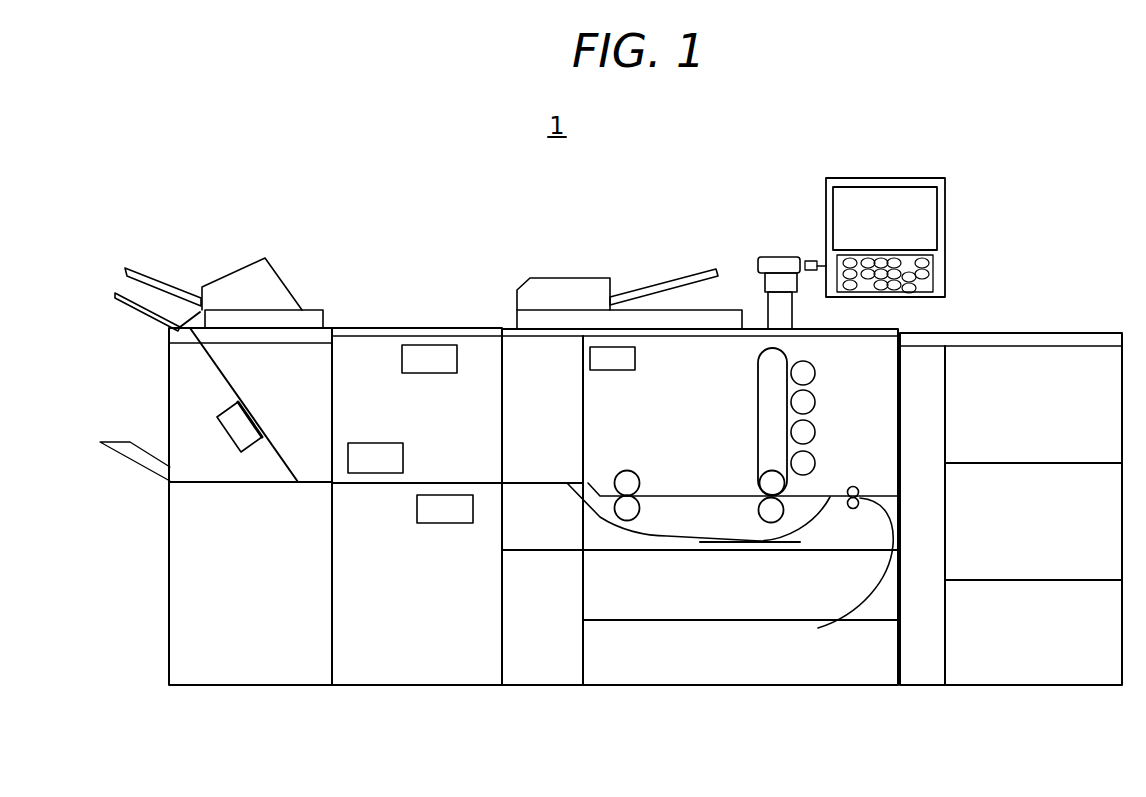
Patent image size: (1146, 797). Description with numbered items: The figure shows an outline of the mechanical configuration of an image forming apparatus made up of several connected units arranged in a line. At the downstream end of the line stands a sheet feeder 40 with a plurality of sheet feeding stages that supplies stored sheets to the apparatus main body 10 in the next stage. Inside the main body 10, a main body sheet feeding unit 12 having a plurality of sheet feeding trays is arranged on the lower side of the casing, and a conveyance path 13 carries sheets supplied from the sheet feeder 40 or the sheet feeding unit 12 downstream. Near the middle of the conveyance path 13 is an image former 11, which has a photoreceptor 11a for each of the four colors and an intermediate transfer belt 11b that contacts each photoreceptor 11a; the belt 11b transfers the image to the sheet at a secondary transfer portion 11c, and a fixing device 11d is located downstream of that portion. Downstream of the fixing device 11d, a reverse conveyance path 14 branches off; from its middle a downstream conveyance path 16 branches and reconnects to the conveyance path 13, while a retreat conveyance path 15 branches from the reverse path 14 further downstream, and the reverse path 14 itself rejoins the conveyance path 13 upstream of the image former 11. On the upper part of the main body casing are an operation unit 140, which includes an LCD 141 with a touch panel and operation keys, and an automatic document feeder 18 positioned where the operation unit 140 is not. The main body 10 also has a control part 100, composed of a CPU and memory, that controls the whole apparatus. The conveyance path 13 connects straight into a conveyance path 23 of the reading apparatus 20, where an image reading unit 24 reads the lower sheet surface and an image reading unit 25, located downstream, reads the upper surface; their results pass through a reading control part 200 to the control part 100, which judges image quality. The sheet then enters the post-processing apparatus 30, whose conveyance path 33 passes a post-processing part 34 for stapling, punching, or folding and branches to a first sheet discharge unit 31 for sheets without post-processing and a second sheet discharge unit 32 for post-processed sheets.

The apparatus main body 10 is at (760, 429).
The image former 11 is at (774, 435).
The photoreceptor 11a is at (822, 390).
The intermediate transfer belt 11b is at (757, 410).
The secondary transfer portion 11c is at (773, 510).
The fixing device 11d is at (627, 482).
The main body sheet feeding unit 12 is at (627, 655).
The conveyance path 13 is at (830, 493).
The reverse conveyance path 14 is at (663, 537).
The retreat conveyance path 15 is at (787, 545).
The downstream conveyance path 16 is at (572, 493).
The automatic document feeder (ADF) 18 is at (560, 277).
The reading apparatus 20 is at (417, 526).
The conveyance path 23 is at (484, 483).
The image reading unit 24 is at (443, 525).
The image reading unit 25 is at (378, 442).
The post-processing apparatus 30 is at (216, 478).
The first sheet discharge unit 31 is at (127, 460).
The second sheet discharge unit 32 is at (173, 262).
The conveyance path 33 is at (308, 483).
The post-processing part 34 is at (215, 420).
The sheet feeder 40 is at (1058, 688).
The control part 100 is at (610, 372).
The operation unit 140 is at (888, 202).
The LCD 141 is at (893, 228).
The reading control part 200 is at (430, 345).